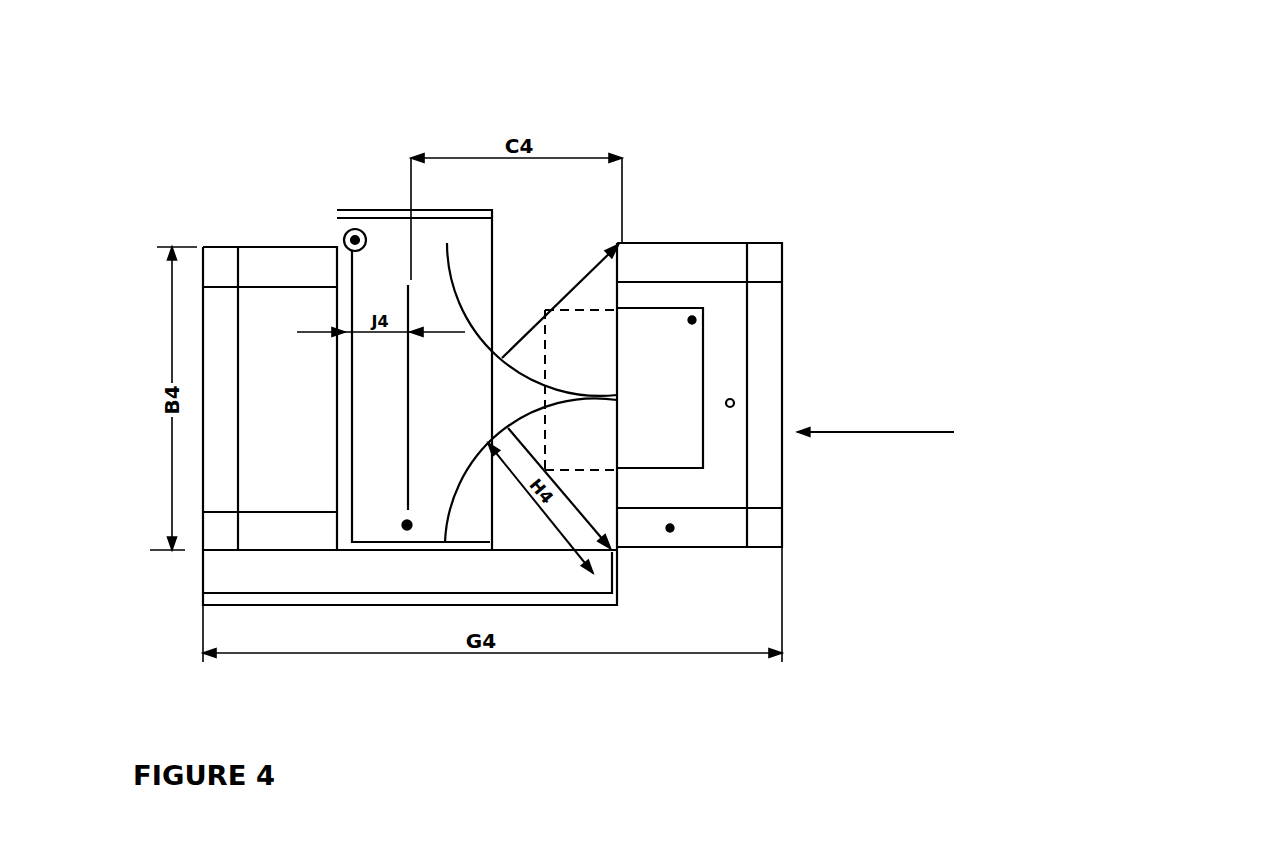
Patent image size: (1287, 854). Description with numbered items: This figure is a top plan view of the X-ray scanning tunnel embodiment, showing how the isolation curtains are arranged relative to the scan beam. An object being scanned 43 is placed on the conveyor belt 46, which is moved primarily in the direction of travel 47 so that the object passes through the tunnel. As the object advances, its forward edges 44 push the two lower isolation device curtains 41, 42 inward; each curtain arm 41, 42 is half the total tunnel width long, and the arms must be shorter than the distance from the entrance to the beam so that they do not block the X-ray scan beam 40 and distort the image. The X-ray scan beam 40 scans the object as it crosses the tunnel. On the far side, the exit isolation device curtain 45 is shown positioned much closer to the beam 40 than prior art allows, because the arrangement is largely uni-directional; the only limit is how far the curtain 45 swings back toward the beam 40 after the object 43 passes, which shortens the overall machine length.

The X-ray scan beam 40 is at (408, 529).
The lower isolation device curtain 41 is at (560, 300).
The lower isolation device curtain 42 is at (558, 493).
The object being scanned 43 is at (692, 320).
The forward edges 44 is at (674, 531).
The exit isolation device curtain 45 is at (350, 280).
The conveyor belt 46 is at (734, 401).
The direction of travel 47 is at (1025, 432).